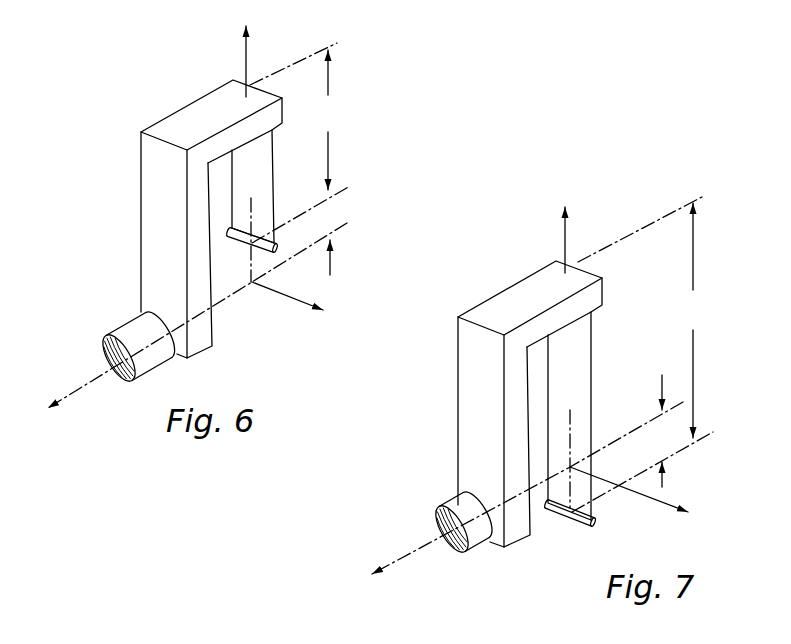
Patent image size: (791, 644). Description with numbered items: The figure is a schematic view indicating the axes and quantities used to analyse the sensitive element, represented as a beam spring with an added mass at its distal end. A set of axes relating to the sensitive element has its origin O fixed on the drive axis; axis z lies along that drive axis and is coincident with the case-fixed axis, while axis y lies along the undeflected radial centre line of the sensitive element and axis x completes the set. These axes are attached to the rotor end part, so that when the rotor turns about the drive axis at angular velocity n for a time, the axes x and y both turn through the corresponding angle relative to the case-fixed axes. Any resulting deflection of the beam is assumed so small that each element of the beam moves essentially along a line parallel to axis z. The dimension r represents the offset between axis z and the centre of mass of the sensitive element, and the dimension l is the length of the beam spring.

In FIG. 6, the angular velocity n is at (158, 378).
In FIG. 7, the angular velocity n is at (482, 556).
In FIG. 6, the axis Ox x is at (298, 301).
In FIG. 7, the axis Ox x is at (639, 495).
In FIG. 6, the axis Oy y is at (233, 56).
In FIG. 7, the axis Oy y is at (561, 226).
In FIG. 6, the axis Oz z is at (191, 332).
In FIG. 7, the axis Oz z is at (514, 498).
In FIG. 6, the origin O is at (247, 300).
In FIG. 7, the origin O is at (558, 457).
In FIG. 6, the length of the beam spring l is at (329, 120).
In FIG. 7, the length of the beam spring l is at (690, 320).
In FIG. 6, the offset r is at (330, 241).
In FIG. 7, the offset r is at (658, 431).